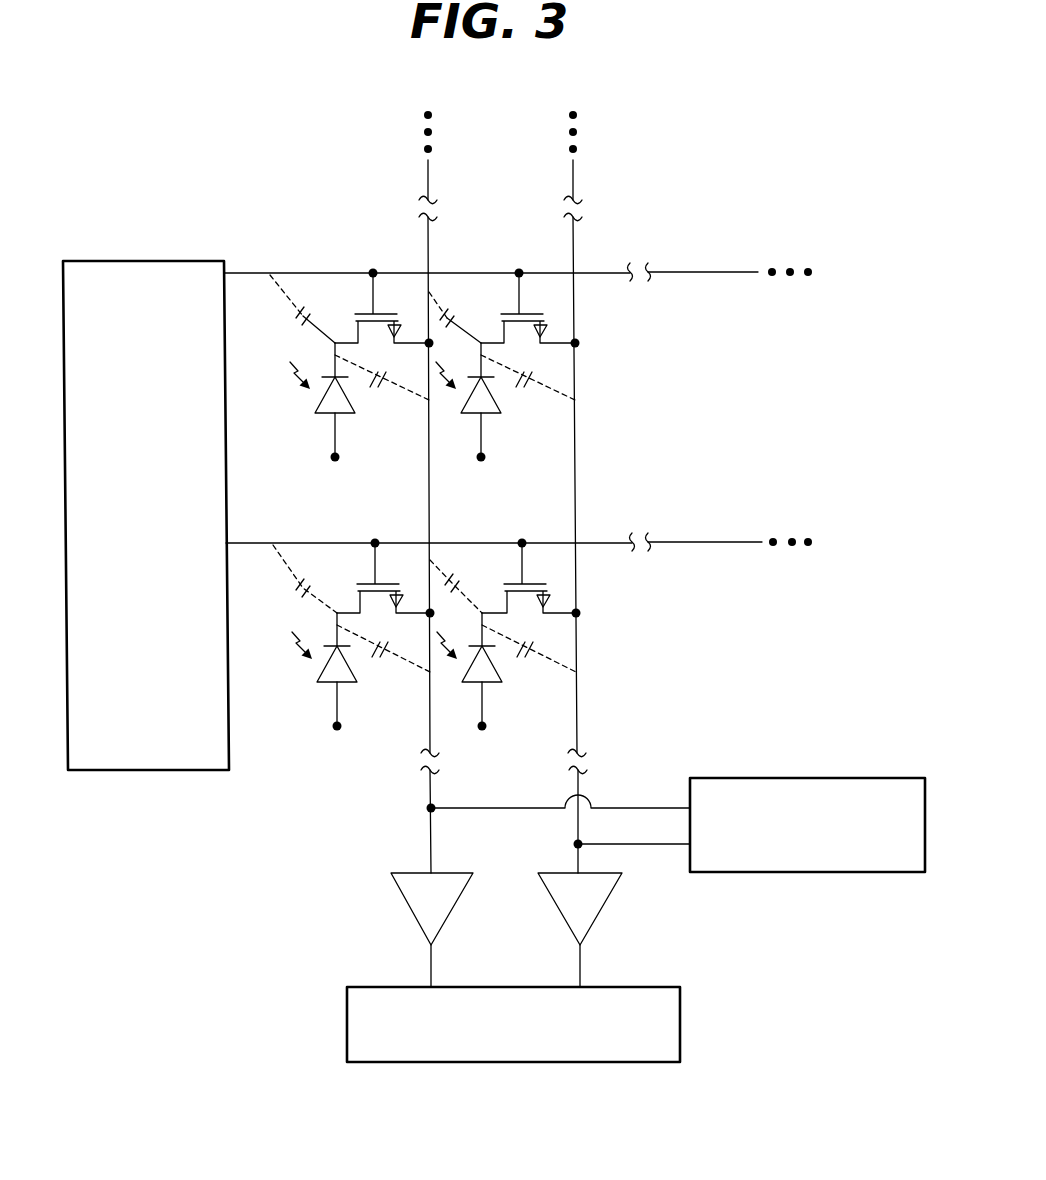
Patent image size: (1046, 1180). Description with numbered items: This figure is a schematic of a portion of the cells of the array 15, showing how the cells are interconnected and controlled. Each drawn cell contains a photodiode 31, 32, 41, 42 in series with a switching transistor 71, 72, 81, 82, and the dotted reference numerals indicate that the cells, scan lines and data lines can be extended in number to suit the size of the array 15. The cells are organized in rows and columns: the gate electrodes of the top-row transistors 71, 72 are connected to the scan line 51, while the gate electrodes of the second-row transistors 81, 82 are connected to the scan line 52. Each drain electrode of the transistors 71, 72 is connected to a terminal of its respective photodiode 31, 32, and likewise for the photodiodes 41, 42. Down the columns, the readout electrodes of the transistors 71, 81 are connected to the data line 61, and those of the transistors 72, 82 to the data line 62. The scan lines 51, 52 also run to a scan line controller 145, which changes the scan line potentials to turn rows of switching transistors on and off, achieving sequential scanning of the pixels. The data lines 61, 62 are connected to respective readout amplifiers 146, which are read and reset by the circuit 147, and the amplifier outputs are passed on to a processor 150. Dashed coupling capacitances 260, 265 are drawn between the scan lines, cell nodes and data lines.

The array 15 is at (774, 354).
The photodiode 31 is at (318, 413).
The photodiode 32 is at (500, 413).
The photodiode 41 is at (320, 683).
The photodiode 42 is at (500, 683).
The scan line 51 is at (692, 272).
The scan line 52 is at (698, 542).
The data line 61 is at (430, 178).
The data line 62 is at (576, 178).
The transistor 71 is at (366, 313).
The transistor 72 is at (510, 312).
The transistor 81 is at (367, 585).
The transistor 82 is at (515, 585).
The scan line controller 145 is at (170, 772).
The amplifier 146 is at (457, 910).
The circuit 147 is at (778, 777).
The processor 150 is at (620, 1064).
The parasitic coupling capacitance 260 is at (300, 312).
The parasitic coupling capacitance 265 is at (380, 385).